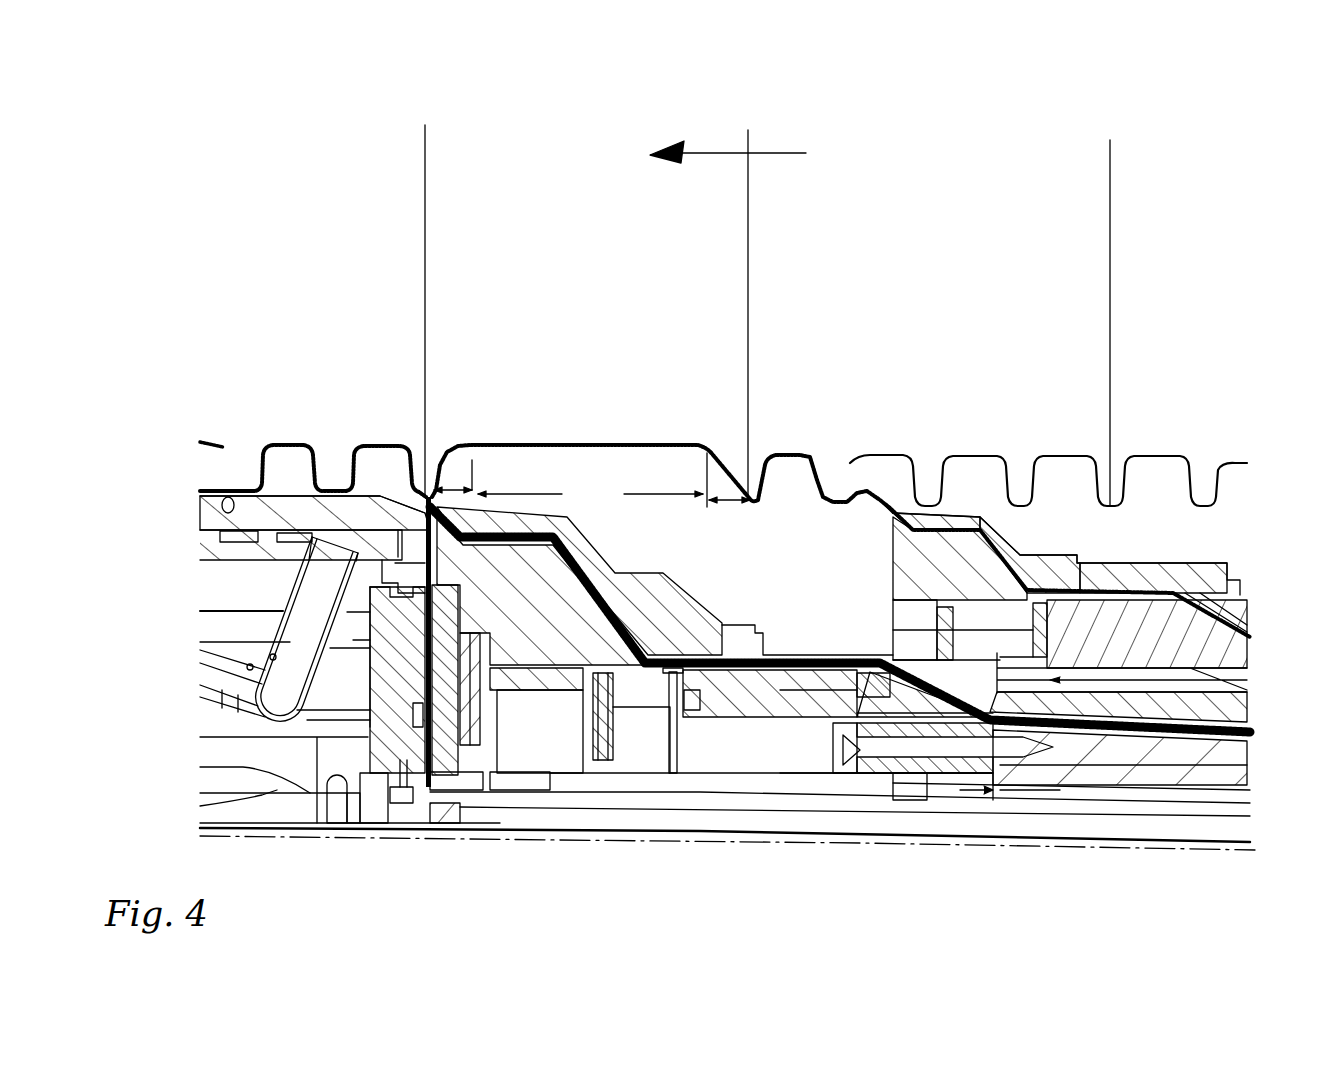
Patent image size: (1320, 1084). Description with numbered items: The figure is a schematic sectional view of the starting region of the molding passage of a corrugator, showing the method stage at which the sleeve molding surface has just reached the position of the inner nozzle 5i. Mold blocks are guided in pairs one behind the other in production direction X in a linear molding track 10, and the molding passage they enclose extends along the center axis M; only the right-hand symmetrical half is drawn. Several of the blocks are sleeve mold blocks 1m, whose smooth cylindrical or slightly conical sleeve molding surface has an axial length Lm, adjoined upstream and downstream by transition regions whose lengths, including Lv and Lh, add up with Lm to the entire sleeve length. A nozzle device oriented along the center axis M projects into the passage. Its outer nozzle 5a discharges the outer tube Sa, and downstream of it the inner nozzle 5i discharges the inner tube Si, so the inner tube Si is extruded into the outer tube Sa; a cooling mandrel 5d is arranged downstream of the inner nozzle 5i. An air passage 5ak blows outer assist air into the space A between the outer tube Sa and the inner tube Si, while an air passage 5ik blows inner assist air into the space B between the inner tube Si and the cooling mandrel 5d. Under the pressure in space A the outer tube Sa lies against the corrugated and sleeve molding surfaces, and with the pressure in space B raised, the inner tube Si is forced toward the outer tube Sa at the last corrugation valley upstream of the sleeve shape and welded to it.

The sleeve mold block 1m is at (322, 290).
The production direction X is at (738, 158).
The cooling mandrel 5d is at (224, 497).
The inner tube Si is at (376, 468).
The outer tube Sa is at (487, 452).
The outer nozzle 5a is at (894, 498).
The inner nozzle 5i is at (433, 496).
The air passage 5ik is at (441, 430).
The air passage 5ak is at (893, 628).
The axial length of transition region Lv is at (453, 490).
The axial length of sleeve molding surface Lm is at (592, 481).
The axial length of transition region Lh is at (723, 500).
The space A is at (692, 536).
The space B is at (399, 493).
The molding track 10 is at (797, 888).
The center axis M is at (880, 847).